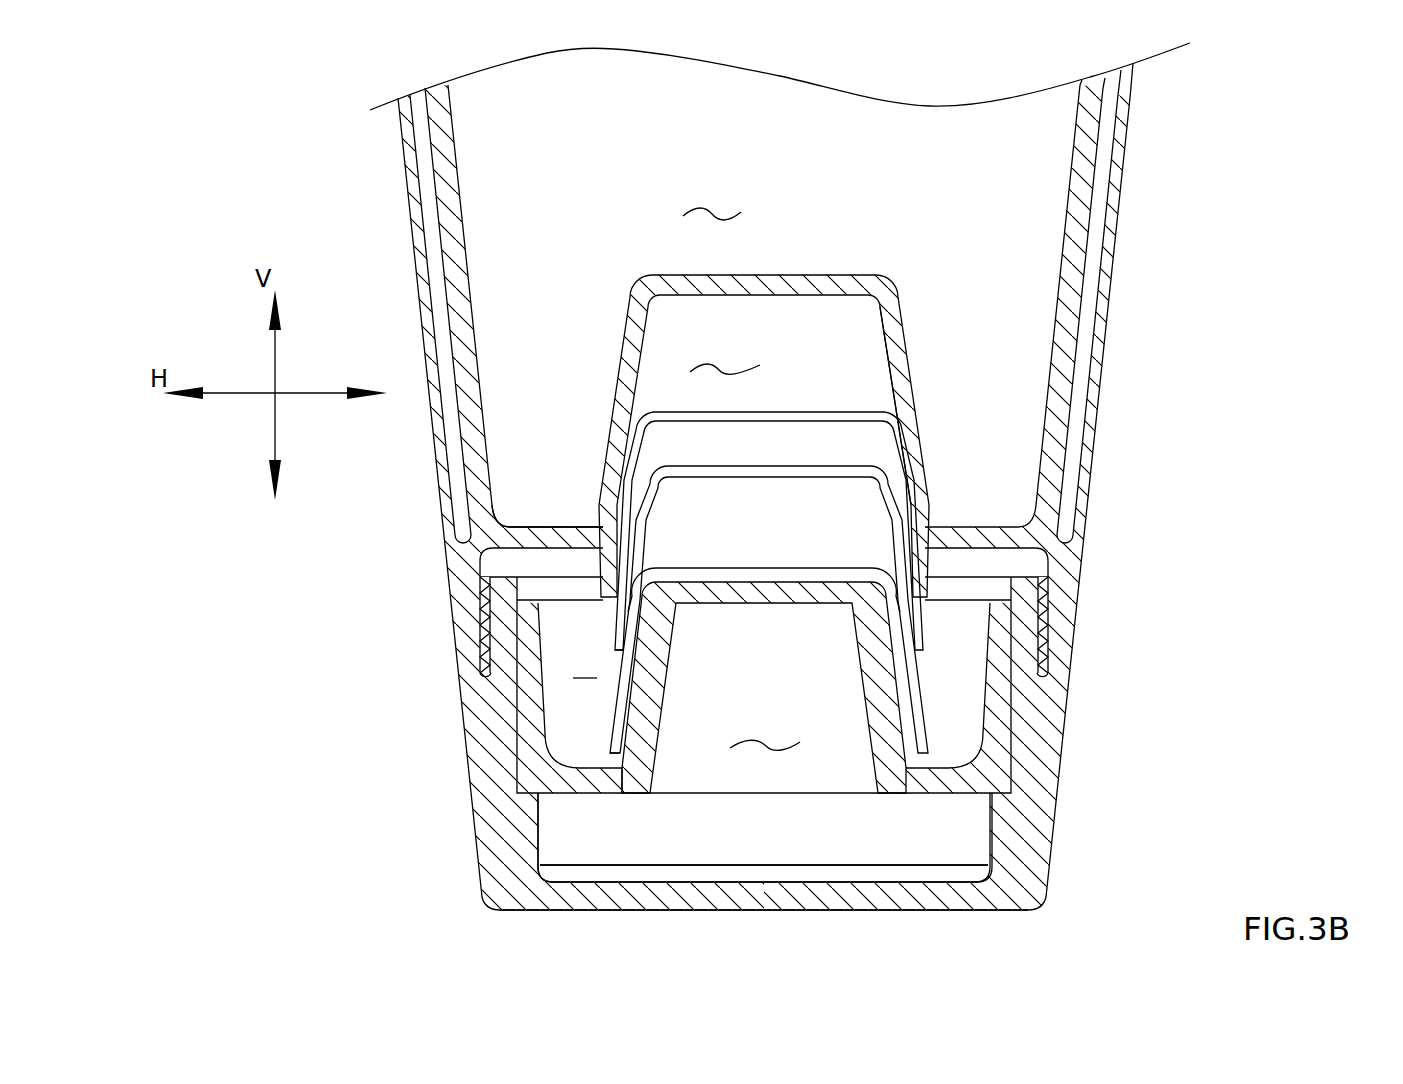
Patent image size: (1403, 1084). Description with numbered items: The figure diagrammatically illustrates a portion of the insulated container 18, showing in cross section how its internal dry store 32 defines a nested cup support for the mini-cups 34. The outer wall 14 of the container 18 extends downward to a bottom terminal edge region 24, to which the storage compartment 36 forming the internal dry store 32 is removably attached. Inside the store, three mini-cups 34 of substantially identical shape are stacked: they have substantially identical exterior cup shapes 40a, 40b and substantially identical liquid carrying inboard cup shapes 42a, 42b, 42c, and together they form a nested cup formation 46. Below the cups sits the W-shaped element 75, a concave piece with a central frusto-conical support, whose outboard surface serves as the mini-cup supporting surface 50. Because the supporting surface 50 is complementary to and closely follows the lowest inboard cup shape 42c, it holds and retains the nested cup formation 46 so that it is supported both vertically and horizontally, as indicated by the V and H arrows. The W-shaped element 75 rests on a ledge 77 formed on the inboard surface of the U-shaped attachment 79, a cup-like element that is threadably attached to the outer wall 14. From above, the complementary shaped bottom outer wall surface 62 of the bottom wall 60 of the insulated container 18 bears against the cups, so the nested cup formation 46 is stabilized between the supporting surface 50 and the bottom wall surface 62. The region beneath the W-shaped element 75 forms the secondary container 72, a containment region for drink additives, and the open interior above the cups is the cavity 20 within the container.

The outer wall 14 is at (1100, 382).
The insulated container 18 is at (372, 190).
The interior cavity 20 is at (712, 194).
The bottom terminal edge region 24 is at (1062, 622).
The internal dry store 32 is at (725, 352).
The mini-cups 34 is at (905, 442).
The storage compartment 36 is at (573, 678).
The exterior cup shape 40a is at (600, 540).
The exterior cup shape 40b is at (573, 678).
The inboard cup shape 42a is at (625, 782).
The inboard cup shape 42b is at (662, 740).
The inboard cup shape 42c is at (670, 730).
The nested cup formation 46 is at (943, 486).
The mini-cup supporting surface 50 is at (860, 775).
The bottom wall 60 is at (903, 300).
The bottom outer wall surface 62 is at (870, 345).
The secondary container 72 is at (765, 730).
The W-shaped element 75 is at (860, 775).
The ledge 77 is at (1042, 835).
The U-shaped attachment 79 is at (1048, 860).